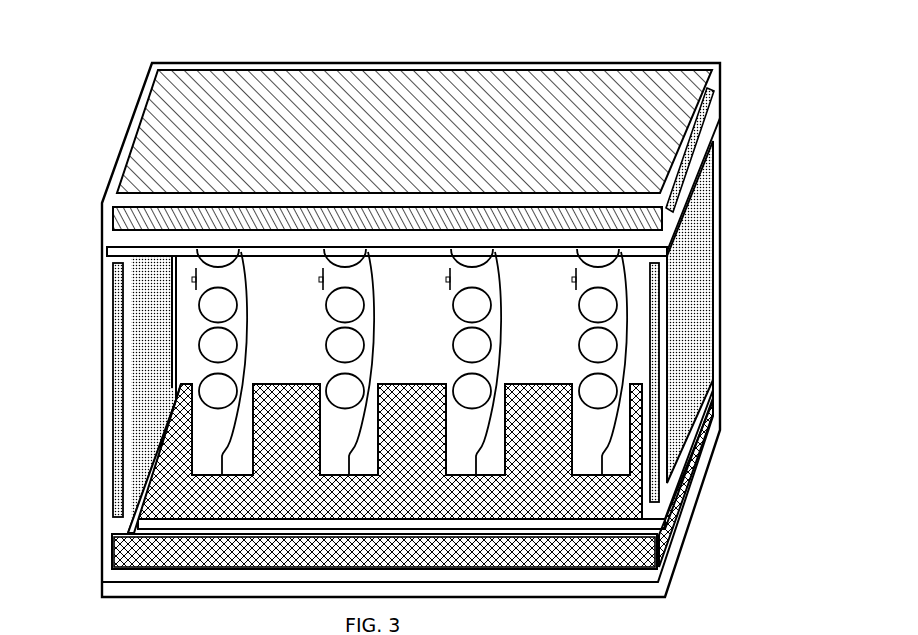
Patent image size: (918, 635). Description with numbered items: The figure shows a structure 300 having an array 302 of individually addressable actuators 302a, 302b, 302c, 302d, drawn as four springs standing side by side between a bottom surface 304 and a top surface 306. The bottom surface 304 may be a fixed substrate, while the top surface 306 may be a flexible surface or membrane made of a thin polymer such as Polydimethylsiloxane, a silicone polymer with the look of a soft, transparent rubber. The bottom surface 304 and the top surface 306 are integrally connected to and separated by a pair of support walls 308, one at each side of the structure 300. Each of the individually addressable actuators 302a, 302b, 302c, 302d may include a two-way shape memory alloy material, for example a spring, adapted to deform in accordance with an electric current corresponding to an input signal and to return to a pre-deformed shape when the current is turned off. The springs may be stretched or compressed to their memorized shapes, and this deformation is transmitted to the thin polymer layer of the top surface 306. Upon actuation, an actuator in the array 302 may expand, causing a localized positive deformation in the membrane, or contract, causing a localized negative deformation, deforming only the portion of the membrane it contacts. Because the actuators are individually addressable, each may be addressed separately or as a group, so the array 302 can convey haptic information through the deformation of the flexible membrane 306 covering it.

The structure 300 is at (128, 70).
The array of individually addressable actuators 302 is at (339, 362).
The individually addressable actuator 302a is at (246, 373).
The individually addressable actuator 302b is at (371, 373).
The individually addressable actuator 302c is at (530, 353).
The individually addressable actuator 302d is at (577, 342).
The bottom surface 304 is at (122, 548).
The top surface 306 is at (720, 90).
The support walls 308 is at (102, 308).